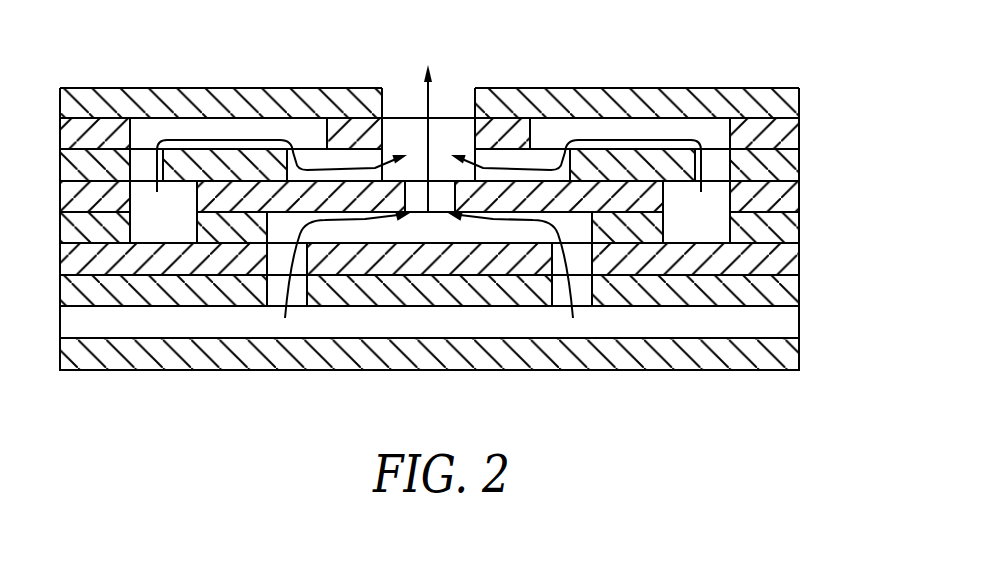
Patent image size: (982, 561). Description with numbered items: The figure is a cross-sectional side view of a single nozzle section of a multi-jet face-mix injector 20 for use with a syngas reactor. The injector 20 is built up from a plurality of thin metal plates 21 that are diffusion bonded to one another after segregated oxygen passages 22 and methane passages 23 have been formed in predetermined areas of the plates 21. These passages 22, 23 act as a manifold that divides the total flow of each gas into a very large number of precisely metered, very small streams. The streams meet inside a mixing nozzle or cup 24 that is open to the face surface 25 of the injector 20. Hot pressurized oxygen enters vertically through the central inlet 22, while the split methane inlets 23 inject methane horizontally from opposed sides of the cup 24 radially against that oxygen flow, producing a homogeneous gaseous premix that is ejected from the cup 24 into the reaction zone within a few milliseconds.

The injector 20 is at (782, 87).
The thin metal plates 21 is at (799, 353).
The oxygen passages 22 is at (420, 228).
The methane passages 23 is at (310, 160).
The mixing nozzle or cup 24 is at (438, 100).
The face surface 25 is at (500, 88).